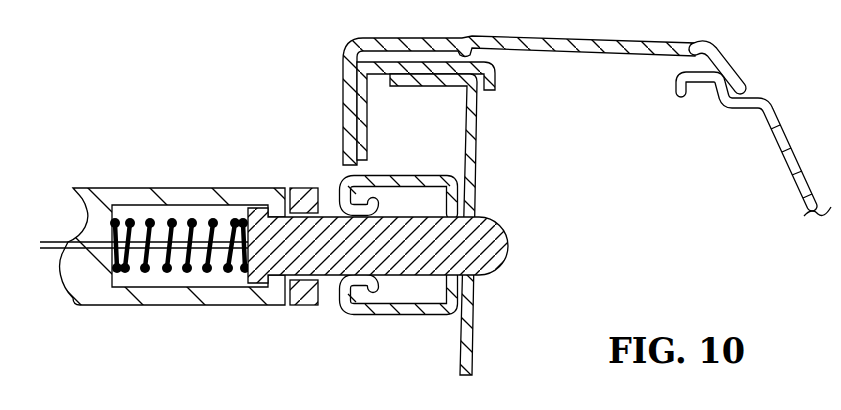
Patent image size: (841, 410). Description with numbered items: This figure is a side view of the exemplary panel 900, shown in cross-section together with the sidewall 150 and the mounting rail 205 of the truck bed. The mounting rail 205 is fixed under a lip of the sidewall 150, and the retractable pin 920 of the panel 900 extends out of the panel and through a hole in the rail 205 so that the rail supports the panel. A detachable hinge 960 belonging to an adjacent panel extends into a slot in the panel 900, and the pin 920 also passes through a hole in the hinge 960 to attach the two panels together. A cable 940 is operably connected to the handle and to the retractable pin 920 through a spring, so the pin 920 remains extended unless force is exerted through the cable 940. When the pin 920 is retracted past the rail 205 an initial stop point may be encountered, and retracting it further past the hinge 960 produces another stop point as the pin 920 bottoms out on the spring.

The sidewall 150 is at (460, 352).
The mounting rail 205 is at (413, 177).
The panel 900 is at (134, 187).
The retractable pin 920 is at (510, 246).
The cable 940 is at (100, 249).
The detachable hinge 960 is at (305, 187).